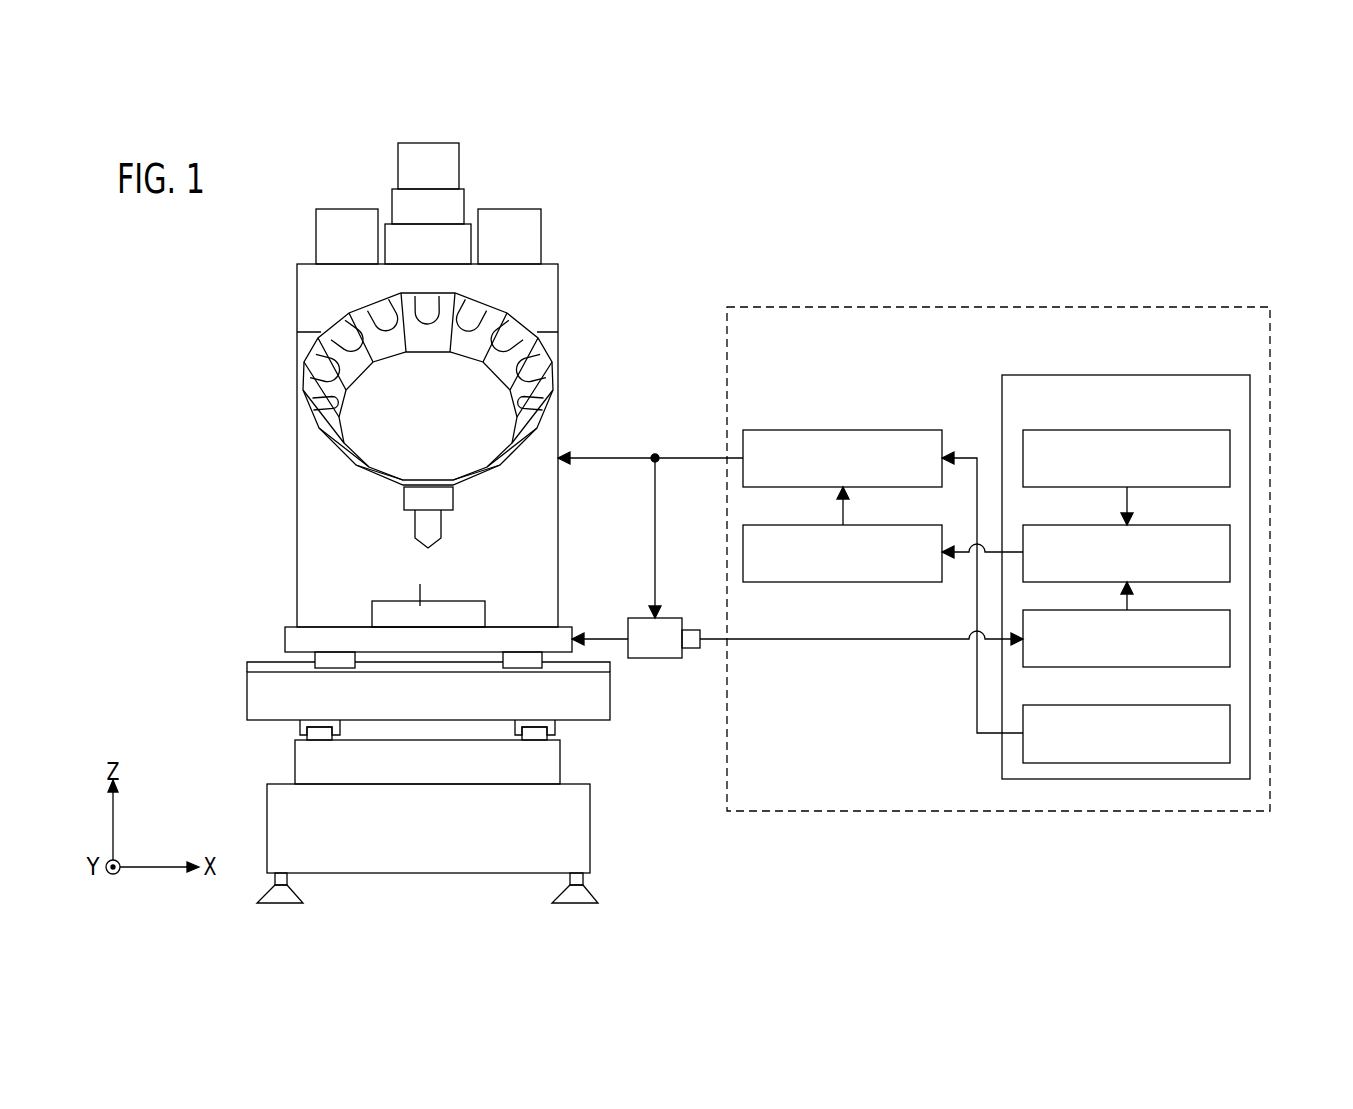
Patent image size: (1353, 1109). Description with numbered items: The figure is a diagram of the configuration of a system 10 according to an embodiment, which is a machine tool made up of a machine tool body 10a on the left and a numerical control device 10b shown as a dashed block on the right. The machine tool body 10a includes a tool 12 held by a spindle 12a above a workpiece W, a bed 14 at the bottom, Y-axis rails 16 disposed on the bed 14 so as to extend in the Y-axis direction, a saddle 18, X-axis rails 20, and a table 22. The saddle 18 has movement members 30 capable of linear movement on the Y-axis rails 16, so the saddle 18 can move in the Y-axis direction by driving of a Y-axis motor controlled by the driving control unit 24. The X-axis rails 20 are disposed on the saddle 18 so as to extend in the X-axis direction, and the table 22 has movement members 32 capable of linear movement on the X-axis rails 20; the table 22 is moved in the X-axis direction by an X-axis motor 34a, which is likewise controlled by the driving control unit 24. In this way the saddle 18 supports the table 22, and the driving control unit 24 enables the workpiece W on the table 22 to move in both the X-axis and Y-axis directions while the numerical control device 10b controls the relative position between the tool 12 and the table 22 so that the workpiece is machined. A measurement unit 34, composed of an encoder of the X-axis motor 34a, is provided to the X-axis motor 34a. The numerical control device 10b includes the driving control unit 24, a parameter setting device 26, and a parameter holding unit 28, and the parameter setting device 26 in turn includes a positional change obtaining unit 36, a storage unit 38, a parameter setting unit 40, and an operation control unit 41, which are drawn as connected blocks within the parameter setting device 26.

The system 10 is at (1068, 262).
The machine tool body 10a is at (600, 326).
The numerical control device 10b is at (947, 307).
The tool 12 is at (435, 535).
The spindle 12a is at (443, 502).
The bed 14 is at (585, 818).
The Y-axis rails 16 is at (323, 742).
The saddle 18 is at (250, 700).
The X-axis rails 20 is at (250, 665).
The table 22 is at (295, 638).
The driving control unit 24 is at (920, 430).
The parameter setting device 26 is at (1207, 375).
The parameter holding unit 28 is at (920, 525).
The movement members 30 is at (298, 723).
The movement members 32 is at (337, 660).
The measurement unit 34 is at (692, 630).
The X-axis motor 34a is at (638, 618).
The positional change obtaining unit 36 is at (1233, 630).
The storage unit 38 is at (1233, 448).
The parameter setting unit 40 is at (1233, 545).
The operation control unit 41 is at (1233, 725).